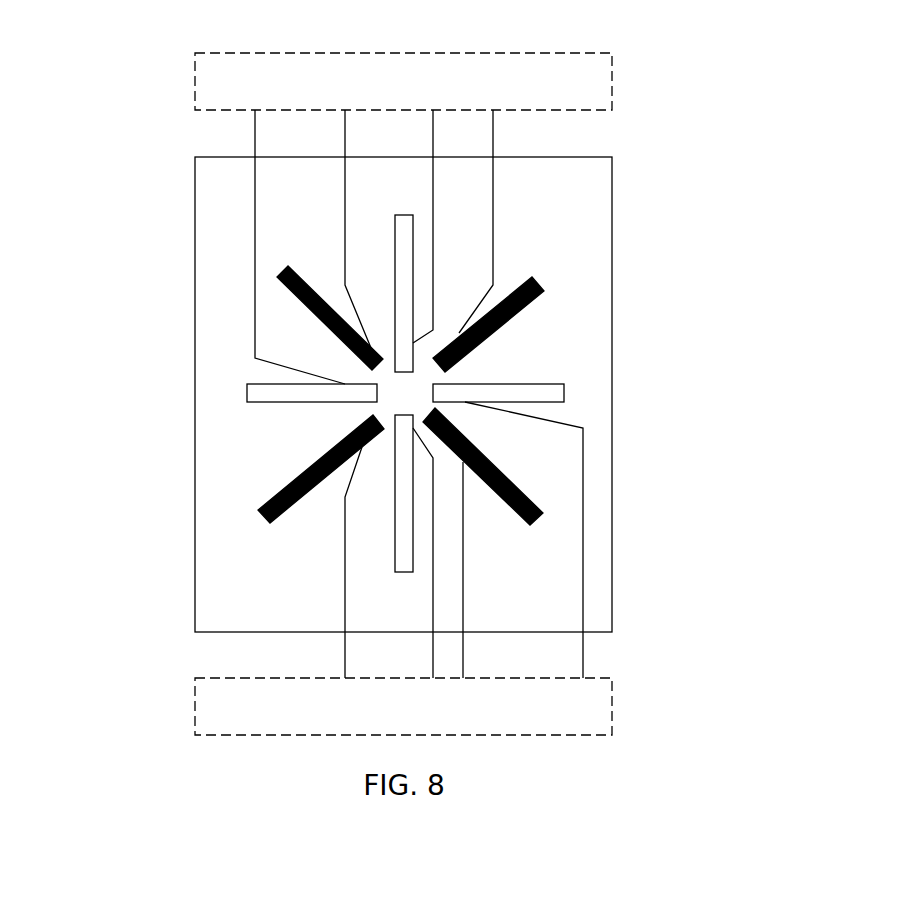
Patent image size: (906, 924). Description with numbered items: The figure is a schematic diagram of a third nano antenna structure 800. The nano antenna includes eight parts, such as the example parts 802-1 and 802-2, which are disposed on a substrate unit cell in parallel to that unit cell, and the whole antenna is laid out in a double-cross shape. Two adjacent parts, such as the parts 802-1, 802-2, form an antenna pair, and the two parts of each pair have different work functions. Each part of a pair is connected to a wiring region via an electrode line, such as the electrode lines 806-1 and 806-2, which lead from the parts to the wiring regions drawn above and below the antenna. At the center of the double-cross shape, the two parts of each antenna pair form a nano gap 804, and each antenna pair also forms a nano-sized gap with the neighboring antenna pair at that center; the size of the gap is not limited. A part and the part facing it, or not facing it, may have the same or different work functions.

The third nano antenna structure 800 is at (678, 27).
The part 802-1 is at (413, 285).
The part 802-2 is at (493, 332).
The nano gap 804 is at (350, 368).
The electrode line 806-1 is at (433, 227).
The electrode line 806-2 is at (493, 273).